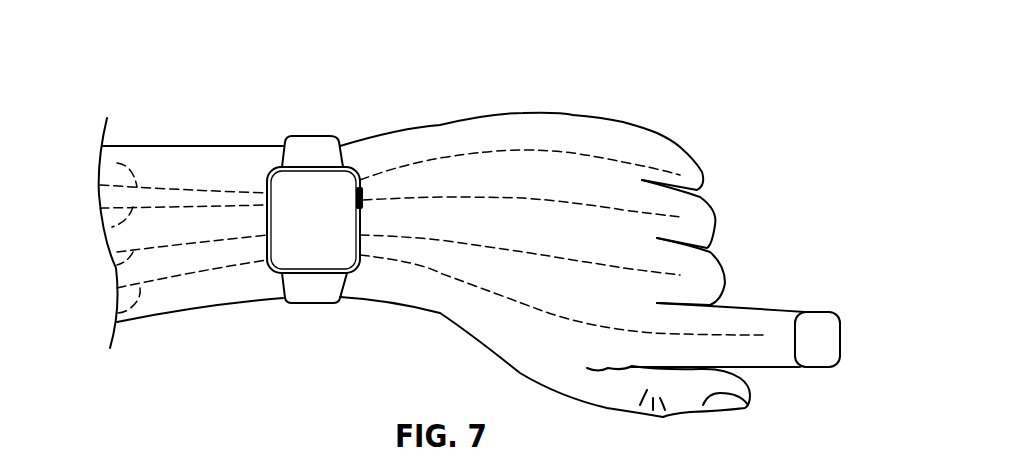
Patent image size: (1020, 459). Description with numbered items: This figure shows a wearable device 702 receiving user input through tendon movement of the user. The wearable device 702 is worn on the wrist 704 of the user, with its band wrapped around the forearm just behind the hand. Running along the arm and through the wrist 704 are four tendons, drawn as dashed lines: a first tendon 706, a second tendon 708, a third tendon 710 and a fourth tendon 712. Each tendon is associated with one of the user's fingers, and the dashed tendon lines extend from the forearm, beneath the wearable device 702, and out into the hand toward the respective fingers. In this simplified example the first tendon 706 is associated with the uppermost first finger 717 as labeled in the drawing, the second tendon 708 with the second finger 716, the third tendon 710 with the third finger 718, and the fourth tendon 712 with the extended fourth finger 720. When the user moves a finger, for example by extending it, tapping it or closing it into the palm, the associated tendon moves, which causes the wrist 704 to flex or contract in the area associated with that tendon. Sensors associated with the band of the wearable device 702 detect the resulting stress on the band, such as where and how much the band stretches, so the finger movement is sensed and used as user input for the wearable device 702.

The wearable device 702 is at (308, 124).
The wrist 704 is at (208, 146).
The first tendon 706 is at (117, 163).
The second tendon 708 is at (112, 227).
The third tendon 710 is at (117, 265).
The fourth tendon 712 is at (117, 313).
The second finger 716 is at (715, 222).
The finger 717 is at (702, 170).
The third finger 718 is at (725, 268).
The fourth finger 720 is at (838, 318).